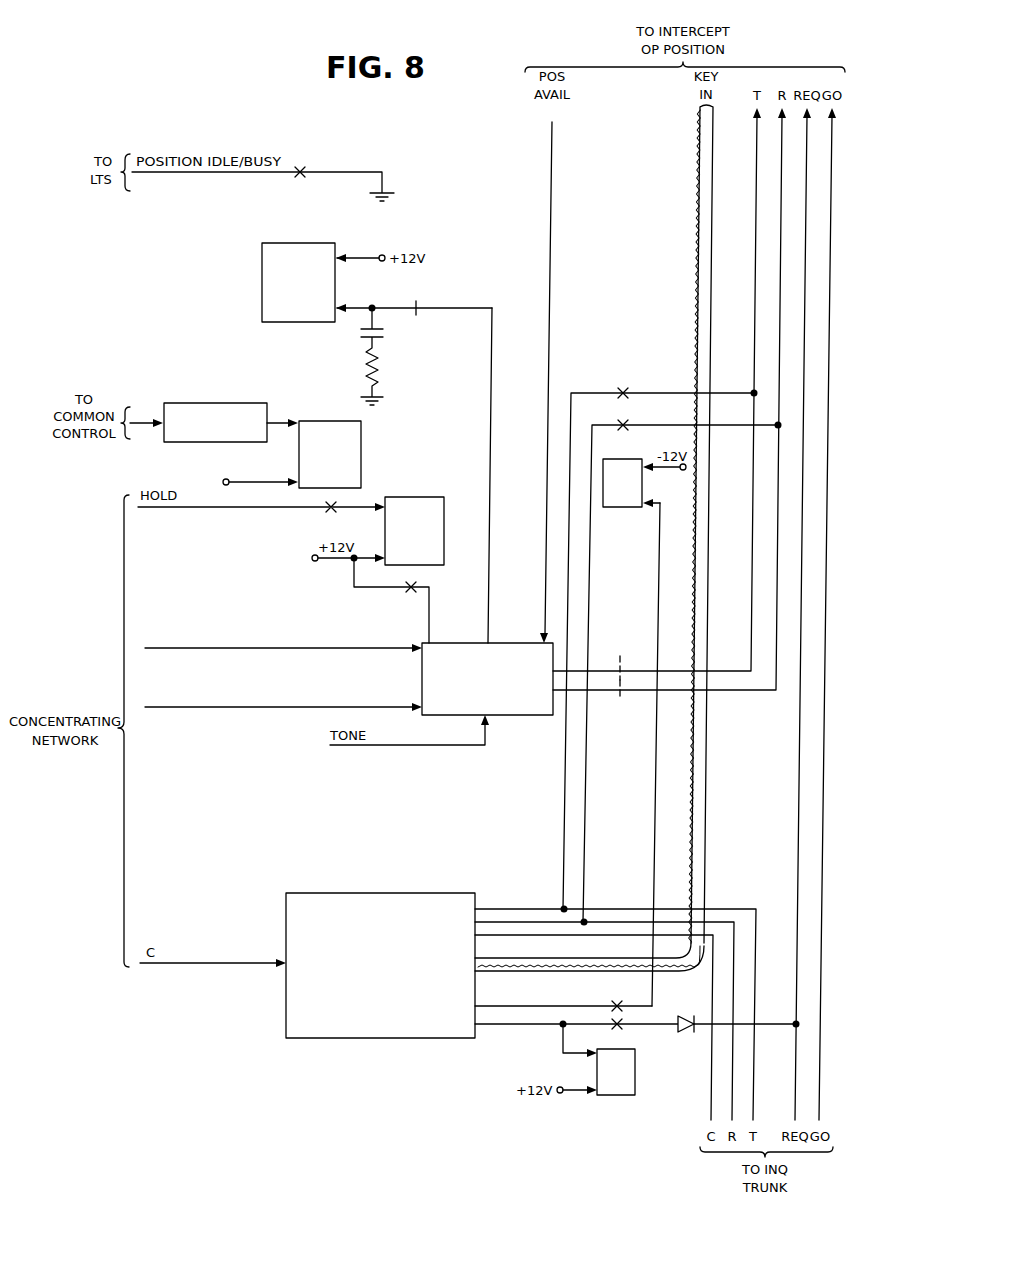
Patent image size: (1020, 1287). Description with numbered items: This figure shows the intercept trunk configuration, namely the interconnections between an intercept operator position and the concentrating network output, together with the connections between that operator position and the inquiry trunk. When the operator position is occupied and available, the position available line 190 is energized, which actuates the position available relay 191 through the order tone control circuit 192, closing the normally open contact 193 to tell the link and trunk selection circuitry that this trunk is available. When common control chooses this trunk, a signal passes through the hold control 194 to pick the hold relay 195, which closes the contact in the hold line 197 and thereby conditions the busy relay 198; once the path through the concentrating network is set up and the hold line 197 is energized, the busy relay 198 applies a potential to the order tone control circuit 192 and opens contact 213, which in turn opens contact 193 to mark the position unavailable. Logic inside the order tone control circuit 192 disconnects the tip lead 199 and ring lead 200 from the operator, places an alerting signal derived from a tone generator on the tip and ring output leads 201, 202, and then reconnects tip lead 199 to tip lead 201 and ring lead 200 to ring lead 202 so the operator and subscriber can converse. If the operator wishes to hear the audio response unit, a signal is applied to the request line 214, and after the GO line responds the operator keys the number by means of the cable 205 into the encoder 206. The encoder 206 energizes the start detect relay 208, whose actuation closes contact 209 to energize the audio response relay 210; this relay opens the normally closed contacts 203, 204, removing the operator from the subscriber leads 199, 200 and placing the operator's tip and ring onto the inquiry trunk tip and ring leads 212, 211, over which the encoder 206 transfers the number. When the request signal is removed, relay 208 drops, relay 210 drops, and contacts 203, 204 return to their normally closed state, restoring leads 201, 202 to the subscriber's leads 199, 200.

The position available line 190 is at (551, 163).
The position available relay 191 is at (262, 272).
The order tone control circuit 192 is at (548, 716).
The normally open contact 193 is at (300, 176).
The hold control 194 is at (200, 403).
The hold relay 195 is at (362, 462).
The hold line 197 is at (228, 509).
The busy relay 198 is at (444, 566).
The tip lead 199 is at (262, 630).
The ring lead 200 is at (293, 707).
The tip output lead 201 is at (735, 671).
The ring output lead 202 is at (766, 690).
The normally closed contact 203 is at (621, 655).
The normally closed contact 204 is at (620, 700).
The cable 205 is at (700, 192).
The encoder 206 is at (366, 893).
The start detect relay 208 is at (636, 1070).
The contact 209 is at (615, 1003).
The audio response relay 210 is at (630, 459).
The inquiry trunk ring lead 211 is at (734, 1012).
The inquiry trunk tip lead 212 is at (756, 986).
The contact 213 is at (416, 315).
The request line 214 is at (798, 830).